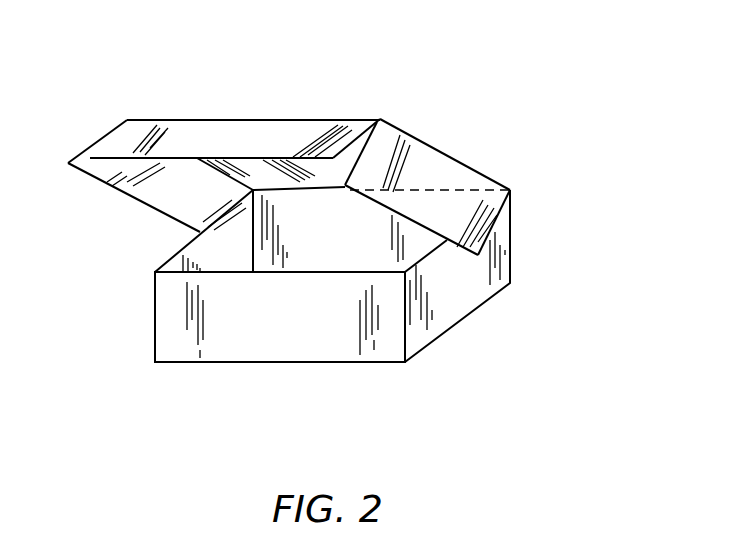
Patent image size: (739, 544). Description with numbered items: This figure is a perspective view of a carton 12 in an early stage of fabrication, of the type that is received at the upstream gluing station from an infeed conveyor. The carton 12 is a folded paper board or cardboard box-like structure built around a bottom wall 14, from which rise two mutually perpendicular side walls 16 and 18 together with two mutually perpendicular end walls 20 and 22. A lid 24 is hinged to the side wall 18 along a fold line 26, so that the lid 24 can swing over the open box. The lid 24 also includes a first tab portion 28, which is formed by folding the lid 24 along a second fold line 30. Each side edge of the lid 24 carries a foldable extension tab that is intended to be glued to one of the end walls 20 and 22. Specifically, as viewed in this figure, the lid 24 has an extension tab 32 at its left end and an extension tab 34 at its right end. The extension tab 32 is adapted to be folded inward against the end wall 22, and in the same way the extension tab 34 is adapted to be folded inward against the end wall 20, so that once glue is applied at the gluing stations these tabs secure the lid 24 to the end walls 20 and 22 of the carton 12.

The carton 12 is at (414, 91).
The bottom wall 14 is at (305, 362).
The side wall 16 is at (259, 318).
The side wall 18 is at (315, 231).
The end wall 20 is at (445, 291).
The end wall 22 is at (227, 258).
The lid 24 is at (296, 118).
The fold line 26 is at (408, 187).
The first tab portion 28 is at (222, 155).
The fold line 30 is at (185, 120).
The extension tab 32 is at (173, 201).
The extension tab 34 is at (443, 218).